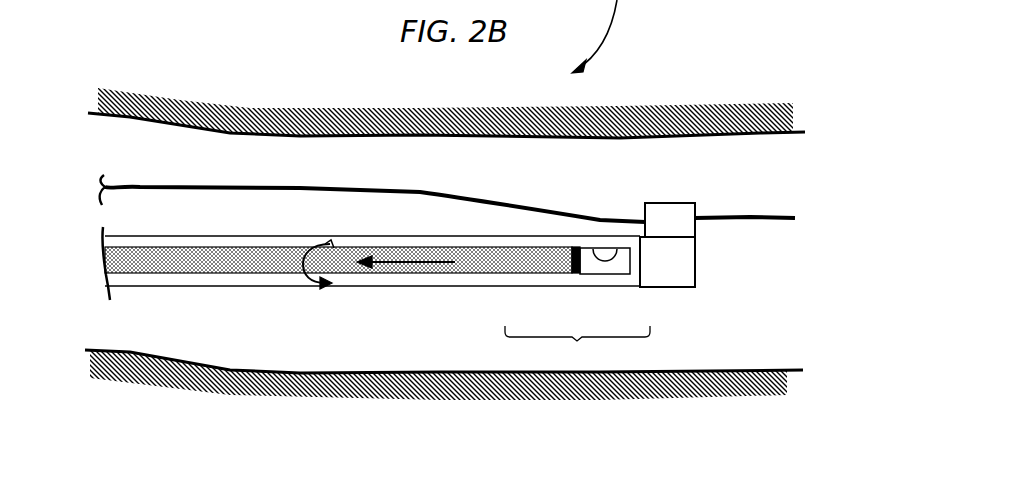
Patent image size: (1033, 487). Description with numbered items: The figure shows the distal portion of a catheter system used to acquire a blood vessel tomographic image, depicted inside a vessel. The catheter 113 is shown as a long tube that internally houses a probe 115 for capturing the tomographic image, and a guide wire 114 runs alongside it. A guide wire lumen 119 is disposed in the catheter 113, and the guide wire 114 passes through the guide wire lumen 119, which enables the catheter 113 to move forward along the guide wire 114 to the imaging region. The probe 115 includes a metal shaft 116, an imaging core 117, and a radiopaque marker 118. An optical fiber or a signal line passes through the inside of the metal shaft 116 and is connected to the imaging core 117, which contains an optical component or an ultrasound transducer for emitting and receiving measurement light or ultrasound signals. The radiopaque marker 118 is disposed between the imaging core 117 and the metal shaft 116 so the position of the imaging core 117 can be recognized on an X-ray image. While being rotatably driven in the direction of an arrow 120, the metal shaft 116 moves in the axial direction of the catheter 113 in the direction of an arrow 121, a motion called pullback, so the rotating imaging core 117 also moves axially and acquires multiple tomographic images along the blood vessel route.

The catheter 113 is at (195, 290).
The guide wire 114 is at (778, 218).
The probe 115 is at (577, 341).
The metal shaft 116 is at (533, 276).
The imaging core 117 is at (625, 276).
The radiopaque marker 118 is at (576, 276).
The guide wire lumen 119 is at (676, 203).
The arrow 120 is at (303, 270).
The arrow 121 is at (420, 258).